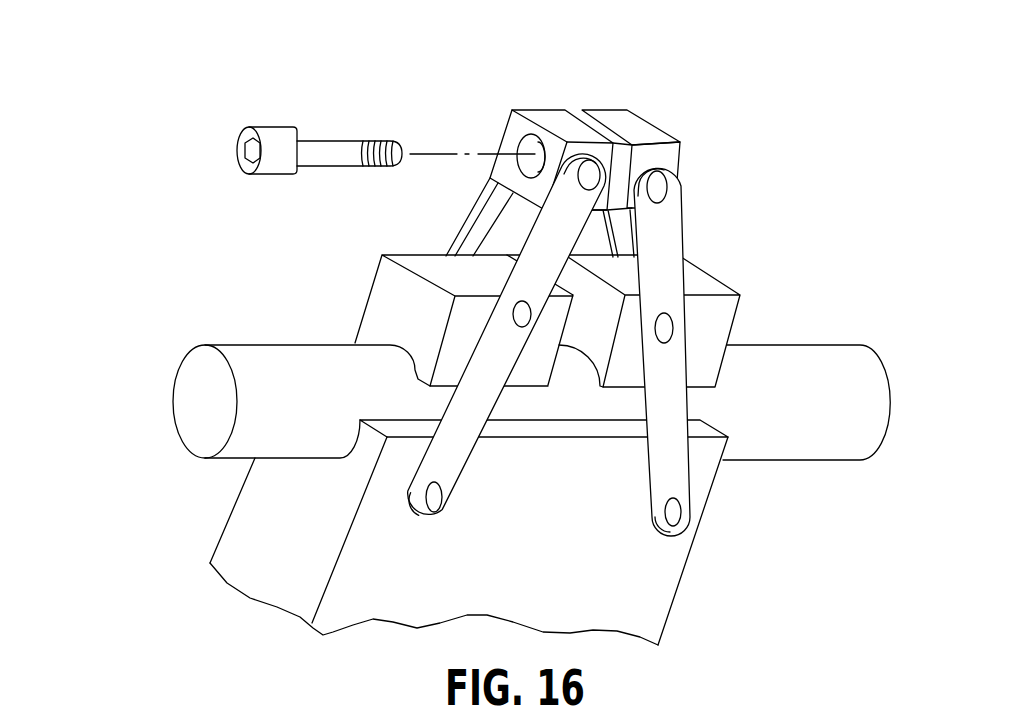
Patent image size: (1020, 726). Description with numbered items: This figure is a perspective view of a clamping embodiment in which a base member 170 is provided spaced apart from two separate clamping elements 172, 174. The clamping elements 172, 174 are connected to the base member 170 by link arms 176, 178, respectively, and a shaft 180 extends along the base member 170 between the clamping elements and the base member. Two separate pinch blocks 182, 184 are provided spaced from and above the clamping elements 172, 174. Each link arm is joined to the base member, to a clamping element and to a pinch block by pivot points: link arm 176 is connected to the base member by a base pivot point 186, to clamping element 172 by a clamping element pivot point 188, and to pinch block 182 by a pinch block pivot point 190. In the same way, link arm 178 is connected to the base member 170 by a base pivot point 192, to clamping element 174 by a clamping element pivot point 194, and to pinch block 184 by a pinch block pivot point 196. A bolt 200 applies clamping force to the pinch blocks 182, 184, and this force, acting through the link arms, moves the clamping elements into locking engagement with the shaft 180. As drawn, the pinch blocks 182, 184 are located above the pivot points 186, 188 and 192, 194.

The base member 170 is at (565, 575).
The clamping element 172 is at (707, 332).
The clamping element 174 is at (422, 325).
The link arm 176 is at (675, 453).
The link arm 178 is at (447, 427).
The shaft 180 is at (325, 410).
The pinch block 182 is at (657, 152).
The pinch block 184 is at (547, 140).
The base pivot point 186 is at (678, 516).
The clamping element pivot point 188 is at (668, 325).
The pinch block pivot point 190 is at (662, 182).
The base pivot point 192 is at (436, 502).
The clamping element pivot point 194 is at (518, 318).
The pinch block pivot point 196 is at (592, 170).
The bolt 200 is at (329, 148).